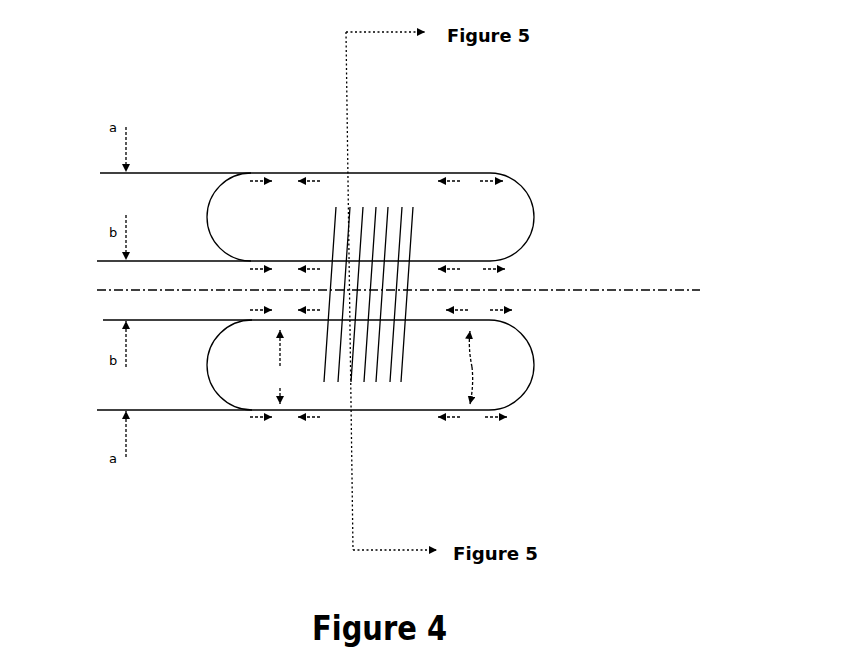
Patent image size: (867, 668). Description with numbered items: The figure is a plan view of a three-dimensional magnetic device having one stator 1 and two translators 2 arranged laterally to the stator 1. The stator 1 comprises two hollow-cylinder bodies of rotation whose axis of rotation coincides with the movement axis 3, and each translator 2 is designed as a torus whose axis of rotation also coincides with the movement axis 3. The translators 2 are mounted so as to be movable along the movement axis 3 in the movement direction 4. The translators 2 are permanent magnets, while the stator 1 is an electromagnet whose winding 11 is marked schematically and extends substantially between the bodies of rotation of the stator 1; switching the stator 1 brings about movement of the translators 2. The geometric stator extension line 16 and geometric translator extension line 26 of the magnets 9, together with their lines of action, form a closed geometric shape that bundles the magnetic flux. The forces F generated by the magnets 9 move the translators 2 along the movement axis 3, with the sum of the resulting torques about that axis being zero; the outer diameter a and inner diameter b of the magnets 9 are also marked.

The stator 1 is at (327, 165).
The translator 2 is at (226, 167).
The movement axis 3 is at (108, 290).
The movement direction 4 is at (608, 148).
The magnets 9 is at (373, 172).
The winding 11 is at (416, 148).
The geometric stator extension line 16 is at (462, 258).
The geometric translator extension line 26 is at (394, 367).